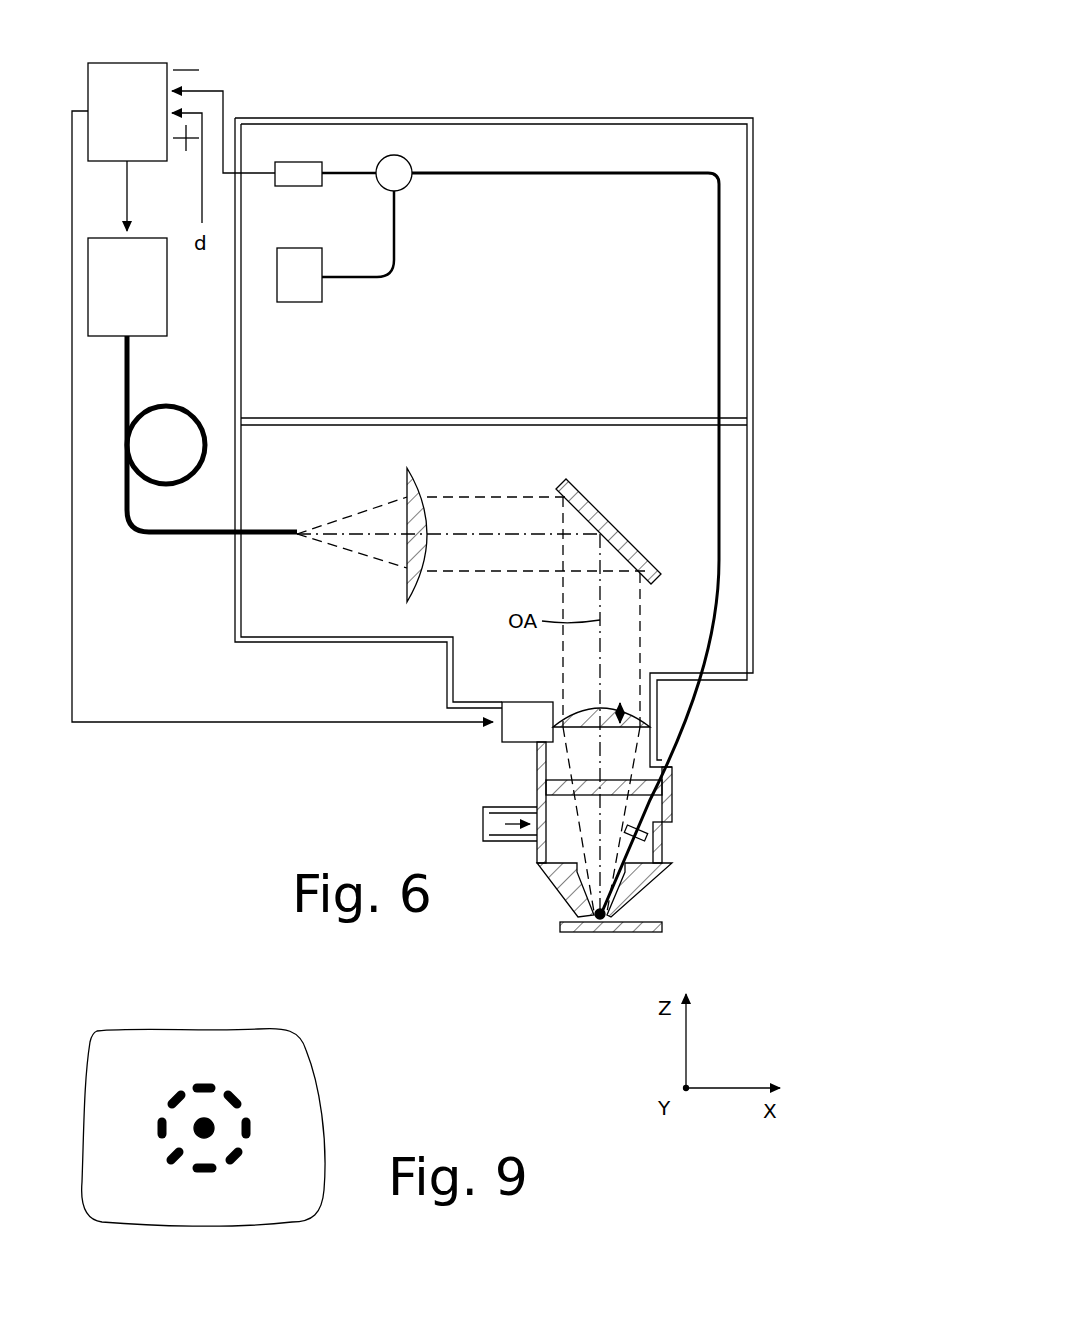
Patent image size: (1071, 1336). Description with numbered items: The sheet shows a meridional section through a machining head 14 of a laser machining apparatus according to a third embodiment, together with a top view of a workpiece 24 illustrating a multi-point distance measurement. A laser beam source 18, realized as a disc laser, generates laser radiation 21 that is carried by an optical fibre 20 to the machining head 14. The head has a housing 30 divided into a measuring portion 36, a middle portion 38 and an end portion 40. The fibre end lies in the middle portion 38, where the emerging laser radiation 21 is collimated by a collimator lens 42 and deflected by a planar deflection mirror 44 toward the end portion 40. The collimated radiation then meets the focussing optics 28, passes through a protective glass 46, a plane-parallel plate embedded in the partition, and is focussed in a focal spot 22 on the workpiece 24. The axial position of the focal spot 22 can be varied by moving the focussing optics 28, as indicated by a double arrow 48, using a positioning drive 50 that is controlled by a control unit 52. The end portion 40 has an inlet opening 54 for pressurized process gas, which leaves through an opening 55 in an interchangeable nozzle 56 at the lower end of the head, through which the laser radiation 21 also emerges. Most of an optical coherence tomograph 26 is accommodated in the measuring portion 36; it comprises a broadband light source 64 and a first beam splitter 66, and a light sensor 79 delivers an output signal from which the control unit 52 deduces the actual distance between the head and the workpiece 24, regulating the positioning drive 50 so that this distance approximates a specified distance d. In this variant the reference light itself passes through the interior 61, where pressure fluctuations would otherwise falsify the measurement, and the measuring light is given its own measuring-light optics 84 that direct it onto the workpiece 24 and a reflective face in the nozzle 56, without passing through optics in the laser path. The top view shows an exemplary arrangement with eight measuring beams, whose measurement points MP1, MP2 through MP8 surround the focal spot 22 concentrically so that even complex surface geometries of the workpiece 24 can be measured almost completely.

In FIG. 6, the machining head 14 is at (220, 634).
In FIG. 6, the laser beam source 18 is at (140, 303).
In FIG. 6, the optical fibre 20 is at (170, 540).
In FIG. 6, the laser radiation 21 is at (350, 512).
In FIG. 6, the focal spot 22 is at (604, 932).
In FIG. 9, the focal spot 22 is at (215, 1125).
In FIG. 6, the workpiece 24 is at (580, 933).
In FIG. 9, the workpiece 24 is at (105, 1083).
In FIG. 6, the optical coherence tomograph 26 is at (476, 138).
In FIG. 6, the focussing optics 28 is at (578, 710).
In FIG. 6, the housing 30 is at (750, 110).
In FIG. 6, the measuring portion 36 is at (575, 112).
In FIG. 6, the middle portion 38 is at (740, 522).
In FIG. 6, the end portion 40 is at (656, 812).
In FIG. 6, the collimator lens 42 is at (418, 472).
In FIG. 6, the planar deflection mirror 44 is at (612, 522).
In FIG. 6, the protective glass 46 is at (557, 780).
In FIG. 6, the double arrow 48 is at (622, 708).
In FIG. 6, the positioning drive 50 is at (510, 702).
In FIG. 6, the control unit 52 is at (140, 128).
In FIG. 6, the inlet opening 54 is at (540, 815).
In FIG. 6, the opening 55 is at (615, 932).
In FIG. 6, the nozzle 56 is at (650, 893).
In FIG. 6, the interior 61 is at (577, 857).
In FIG. 6, the broadband light source 64 is at (312, 291).
In FIG. 6, the first beam splitter 66 is at (406, 186).
In FIG. 6, the light sensor 79 is at (300, 170).
In FIG. 6, the measuring-light optics 84 is at (652, 840).
In FIG. 9, the measurement point MP1 is at (207, 1080).
In FIG. 9, the measurement point MP2 is at (236, 1093).
In FIG. 9, the measurement point MP8 is at (172, 1095).